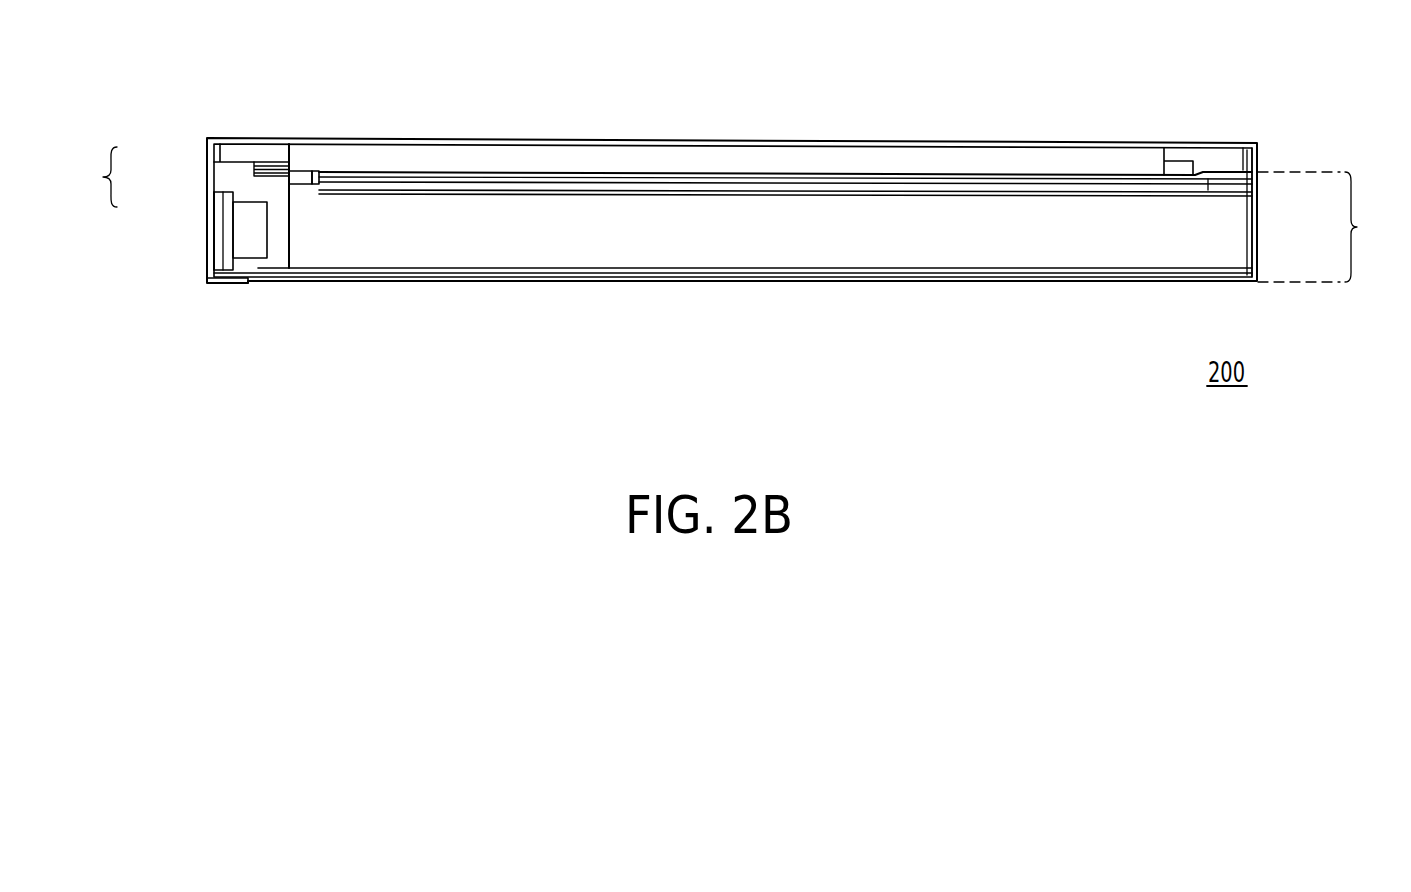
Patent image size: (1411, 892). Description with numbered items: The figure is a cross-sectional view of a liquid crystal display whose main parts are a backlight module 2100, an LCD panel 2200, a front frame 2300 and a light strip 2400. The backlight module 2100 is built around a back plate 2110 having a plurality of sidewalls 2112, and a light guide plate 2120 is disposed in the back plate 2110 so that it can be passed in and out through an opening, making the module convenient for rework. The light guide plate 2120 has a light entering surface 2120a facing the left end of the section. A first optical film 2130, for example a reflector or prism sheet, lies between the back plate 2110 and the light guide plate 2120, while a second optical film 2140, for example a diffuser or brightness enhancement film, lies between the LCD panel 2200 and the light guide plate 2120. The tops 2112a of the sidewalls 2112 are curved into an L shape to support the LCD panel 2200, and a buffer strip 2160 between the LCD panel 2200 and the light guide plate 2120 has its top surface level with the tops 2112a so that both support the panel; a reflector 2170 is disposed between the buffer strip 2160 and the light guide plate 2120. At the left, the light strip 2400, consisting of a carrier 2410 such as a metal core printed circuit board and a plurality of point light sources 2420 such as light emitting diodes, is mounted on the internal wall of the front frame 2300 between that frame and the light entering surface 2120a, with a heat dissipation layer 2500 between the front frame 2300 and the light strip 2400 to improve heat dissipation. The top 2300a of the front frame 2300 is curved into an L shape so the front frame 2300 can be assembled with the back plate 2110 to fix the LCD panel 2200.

The backlight module 2100 is at (1332, 227).
The back plate 2110 is at (1162, 280).
The sidewalls 2112 is at (1258, 243).
The tops of the sidewalls 2112a is at (1176, 168).
The light guide plate 2120 is at (545, 250).
The light entering surface 2120a is at (288, 241).
The first optical film 2130 is at (1110, 277).
The second optical film 2140 is at (1190, 197).
The buffer strip 2160 is at (300, 176).
The reflector 2170 is at (313, 172).
The LCD panel 2200 is at (923, 158).
The front frame 2300 is at (1258, 150).
The top of the front frame 2300a is at (236, 286).
The light strip 2400 is at (88, 177).
The carrier 2410 is at (225, 210).
The point light sources 2420 is at (240, 230).
The heat dissipation layer 2500 is at (216, 252).